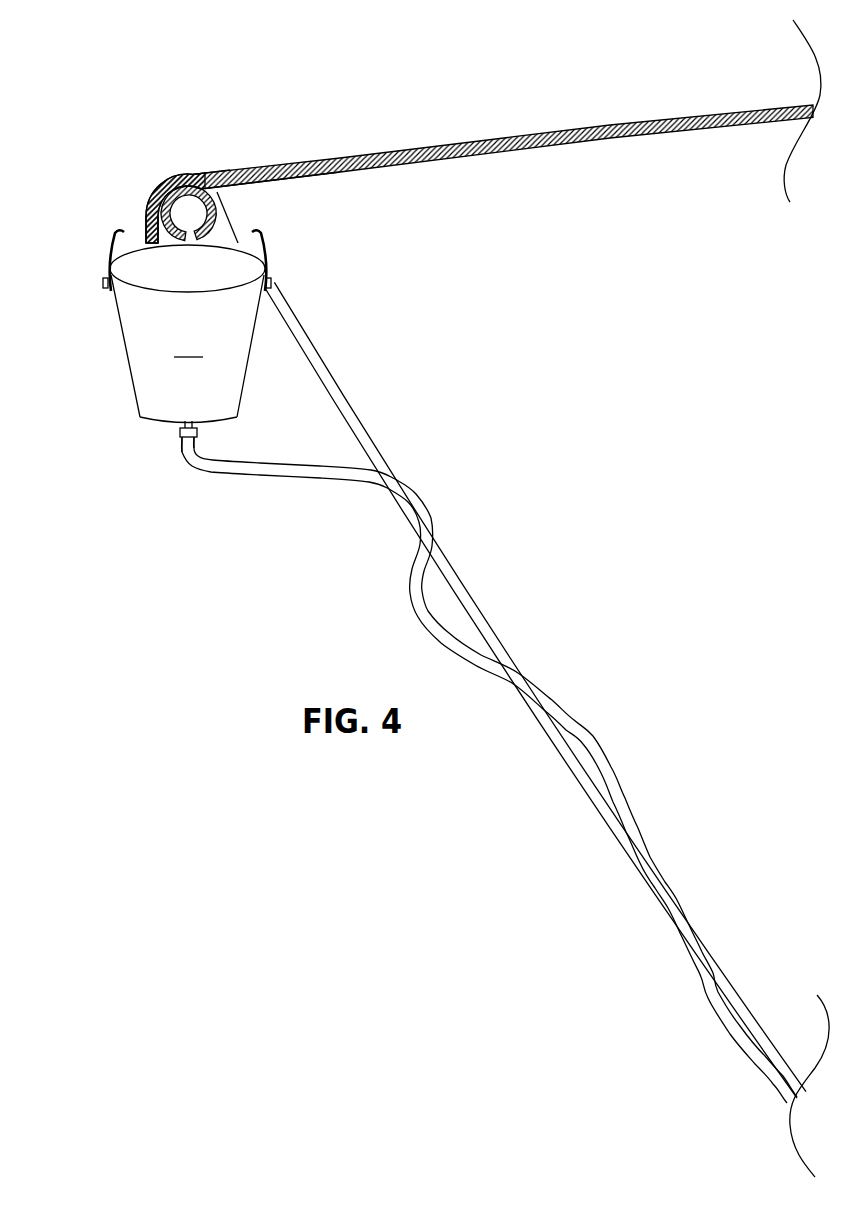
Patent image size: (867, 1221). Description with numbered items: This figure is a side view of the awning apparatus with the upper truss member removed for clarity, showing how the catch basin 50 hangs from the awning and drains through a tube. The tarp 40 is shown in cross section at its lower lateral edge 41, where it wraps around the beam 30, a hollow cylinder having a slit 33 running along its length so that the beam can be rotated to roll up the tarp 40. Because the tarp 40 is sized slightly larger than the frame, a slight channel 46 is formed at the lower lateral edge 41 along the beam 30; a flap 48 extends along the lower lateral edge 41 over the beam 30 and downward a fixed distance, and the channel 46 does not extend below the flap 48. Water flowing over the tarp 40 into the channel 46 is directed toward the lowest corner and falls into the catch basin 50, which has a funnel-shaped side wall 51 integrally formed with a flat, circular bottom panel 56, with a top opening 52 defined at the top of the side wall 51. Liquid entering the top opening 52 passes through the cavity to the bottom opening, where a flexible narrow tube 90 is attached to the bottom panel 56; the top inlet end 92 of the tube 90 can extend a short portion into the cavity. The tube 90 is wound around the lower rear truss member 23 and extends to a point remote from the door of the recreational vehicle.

The lower rear truss member 23 is at (347, 406).
The beam 30 is at (158, 186).
The slit 33 is at (195, 233).
The tarp 40 is at (360, 153).
The lower lateral edge 41 is at (297, 189).
The channel 46 is at (207, 176).
The flap 48 is at (146, 213).
The catch basin 50 is at (98, 400).
The side wall 51 is at (187, 334).
The top opening 52 is at (127, 277).
The bottom panel 56 is at (201, 430).
The flexible narrow tube 90 is at (602, 742).
The top inlet end 92 is at (181, 447).